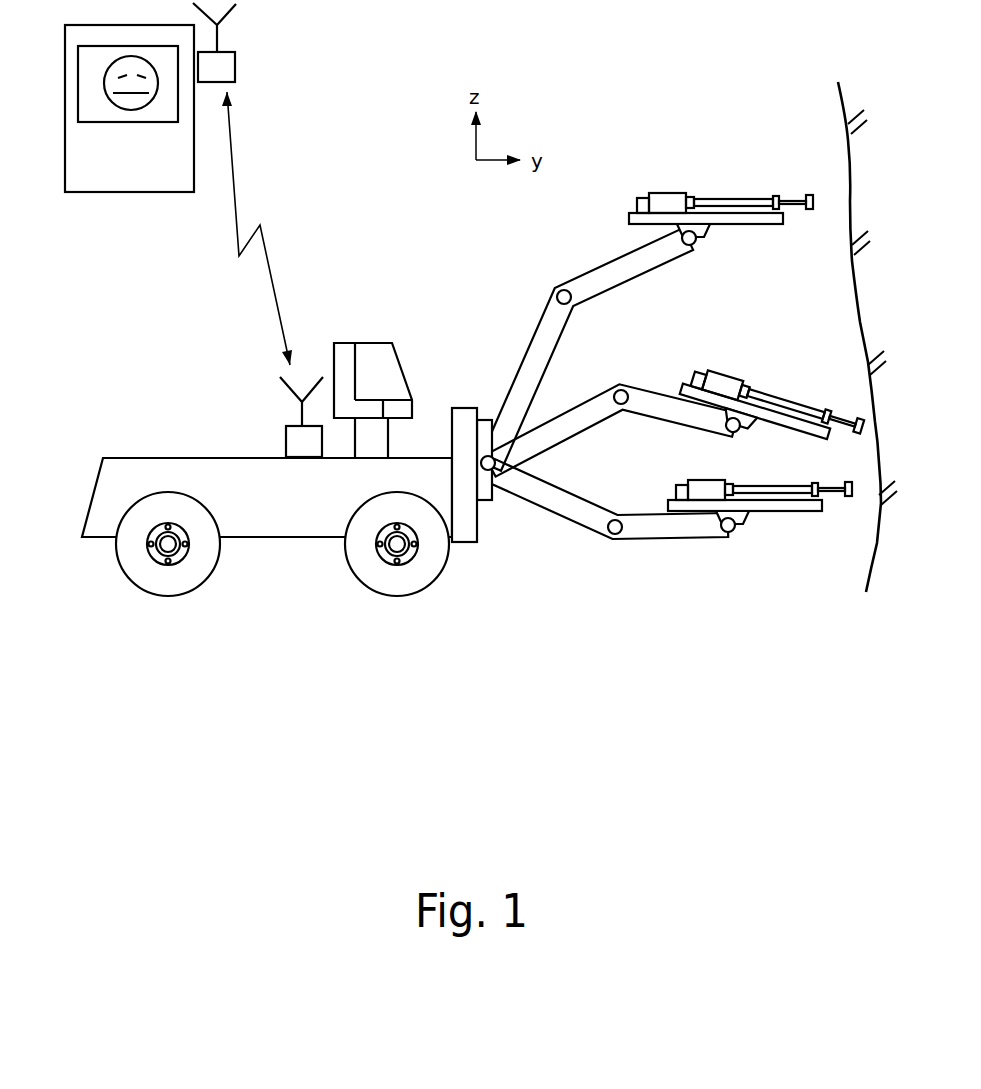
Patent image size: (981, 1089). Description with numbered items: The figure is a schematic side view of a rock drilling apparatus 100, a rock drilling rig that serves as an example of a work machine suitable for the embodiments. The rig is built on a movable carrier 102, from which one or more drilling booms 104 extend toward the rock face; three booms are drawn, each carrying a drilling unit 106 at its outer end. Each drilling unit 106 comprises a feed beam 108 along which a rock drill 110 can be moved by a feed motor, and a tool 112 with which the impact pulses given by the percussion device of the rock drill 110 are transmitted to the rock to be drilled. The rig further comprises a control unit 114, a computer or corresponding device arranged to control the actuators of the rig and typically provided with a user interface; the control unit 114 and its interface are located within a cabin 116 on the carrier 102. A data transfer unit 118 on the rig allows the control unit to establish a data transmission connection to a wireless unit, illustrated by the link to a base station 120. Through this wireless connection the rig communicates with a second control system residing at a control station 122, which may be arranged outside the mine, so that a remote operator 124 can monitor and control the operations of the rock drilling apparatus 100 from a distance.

The rock drilling apparatus 100 is at (147, 365).
The movable carrier 102 is at (298, 520).
The drilling boom 104 is at (587, 283).
The drilling unit 106 is at (767, 355).
The feed beam 108 is at (773, 221).
The rock drill 110 is at (670, 200).
The tool 112 is at (800, 197).
The control unit 114 is at (402, 415).
The cabin 116 is at (368, 348).
The data transfer unit 118 is at (297, 440).
The base station 120 is at (235, 65).
The control station 122 is at (118, 176).
The remote operator 124 is at (113, 63).